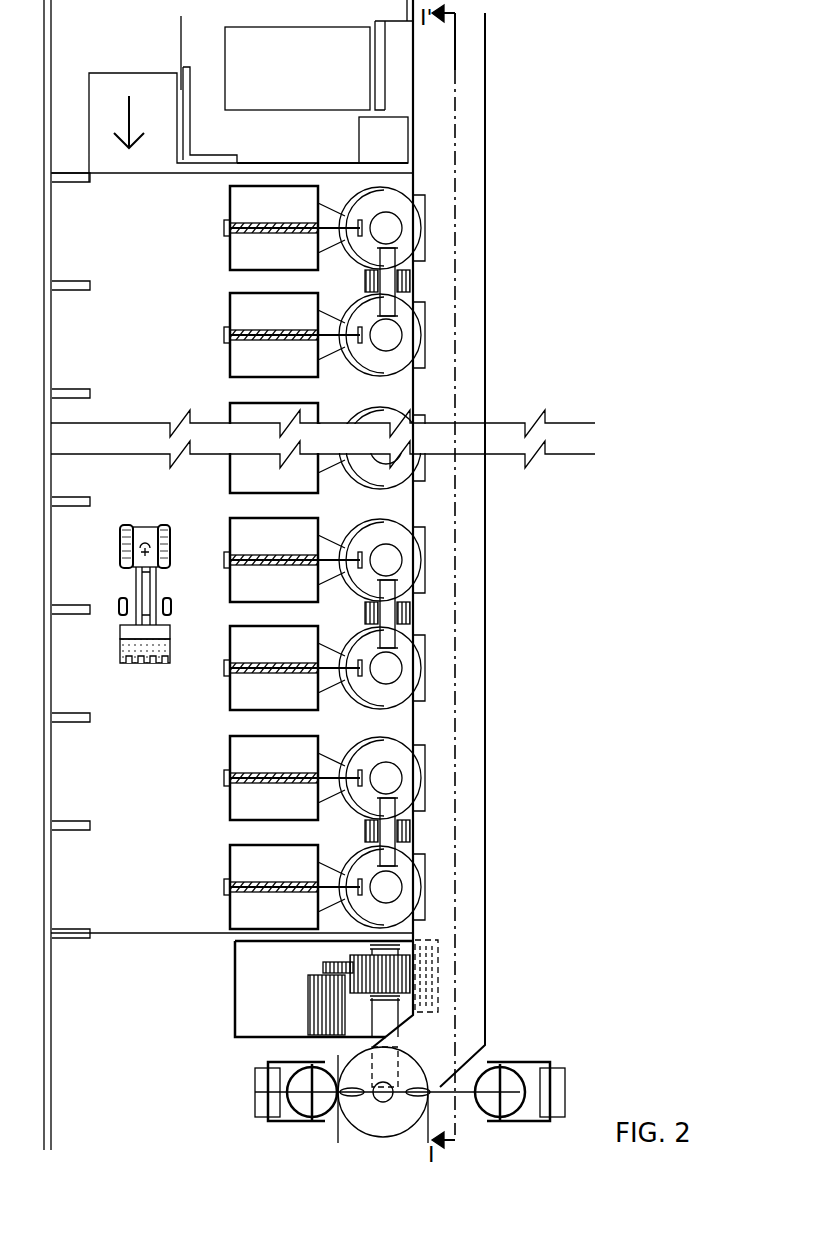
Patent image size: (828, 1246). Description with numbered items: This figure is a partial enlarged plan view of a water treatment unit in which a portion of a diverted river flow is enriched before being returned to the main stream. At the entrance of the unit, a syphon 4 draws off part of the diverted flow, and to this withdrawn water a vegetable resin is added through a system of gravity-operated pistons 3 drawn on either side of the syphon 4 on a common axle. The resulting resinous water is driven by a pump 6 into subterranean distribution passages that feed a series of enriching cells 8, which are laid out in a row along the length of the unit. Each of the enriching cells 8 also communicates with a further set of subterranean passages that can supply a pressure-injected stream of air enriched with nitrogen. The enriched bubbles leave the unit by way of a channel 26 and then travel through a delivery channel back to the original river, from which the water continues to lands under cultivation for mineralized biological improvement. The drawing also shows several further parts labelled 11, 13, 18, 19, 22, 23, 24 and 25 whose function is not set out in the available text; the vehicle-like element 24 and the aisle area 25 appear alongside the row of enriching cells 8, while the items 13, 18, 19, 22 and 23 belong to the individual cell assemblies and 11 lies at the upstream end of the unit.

The gravity-operated pistons 3 is at (300, 1101).
The syphon 4 is at (372, 1052).
The pump 6 is at (383, 981).
The enriching cells 8 is at (385, 544).
The end housing 11 is at (300, 71).
The connecting duct 13 is at (515, 832).
The drive box 18 is at (222, 887).
The drive box 19 is at (222, 778).
The spinning rotor 22 is at (518, 778).
The rotor housing 23 is at (385, 693).
The service vehicle 24 is at (145, 590).
The service aisle 25 is at (73, 338).
The channel 26 is at (470, 718).